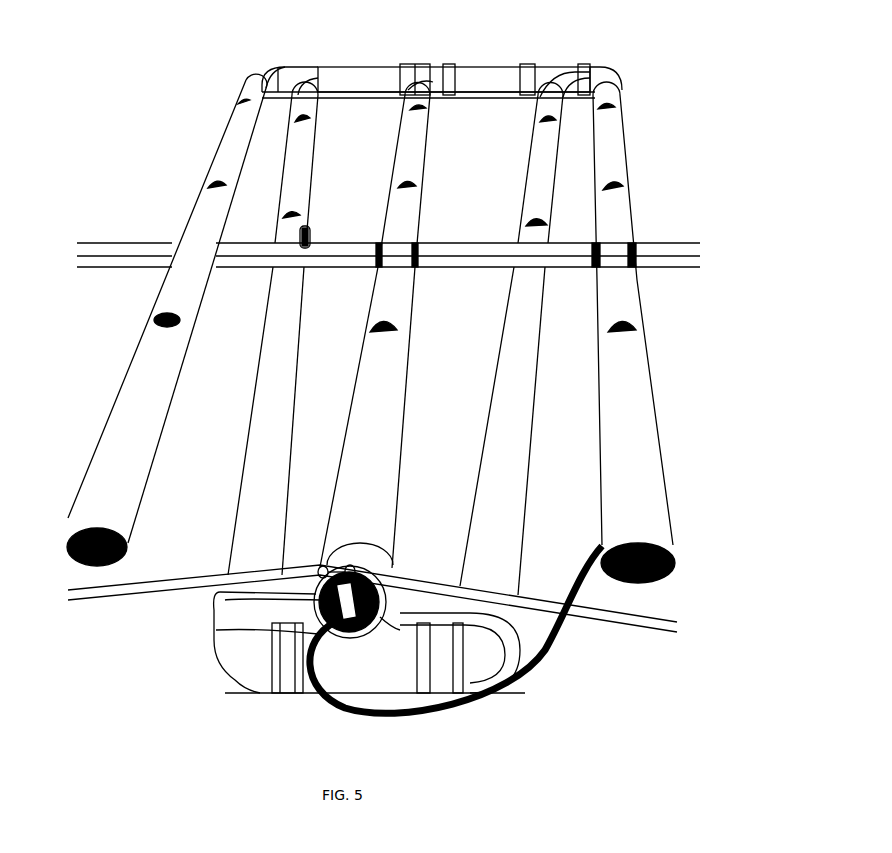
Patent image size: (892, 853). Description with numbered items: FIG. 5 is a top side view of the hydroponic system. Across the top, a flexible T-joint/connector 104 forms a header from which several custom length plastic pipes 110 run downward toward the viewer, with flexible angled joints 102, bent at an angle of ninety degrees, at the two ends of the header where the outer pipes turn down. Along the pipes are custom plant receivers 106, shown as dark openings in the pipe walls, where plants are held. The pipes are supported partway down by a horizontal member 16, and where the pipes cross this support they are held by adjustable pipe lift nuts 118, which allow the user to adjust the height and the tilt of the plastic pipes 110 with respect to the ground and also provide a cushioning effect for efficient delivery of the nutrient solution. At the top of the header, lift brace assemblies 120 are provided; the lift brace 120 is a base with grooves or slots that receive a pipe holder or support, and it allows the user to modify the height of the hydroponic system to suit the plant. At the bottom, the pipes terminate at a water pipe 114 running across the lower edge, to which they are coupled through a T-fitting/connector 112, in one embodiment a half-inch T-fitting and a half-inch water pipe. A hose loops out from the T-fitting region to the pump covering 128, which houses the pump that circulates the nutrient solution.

The frame rail 16 is at (150, 242).
The flexible angled joint 102 is at (258, 73).
The flexible T-joint/connector 104 is at (353, 68).
The custom plant receiver 106 is at (207, 183).
The custom length plastic pipe 110 is at (625, 390).
The T-fitting/connector 112 is at (330, 572).
The water pipe 114 is at (617, 617).
The adjustable pipe lift nut 118 is at (637, 255).
The lift brace assembly 120 is at (278, 99).
The pump covering 128 is at (610, 186).